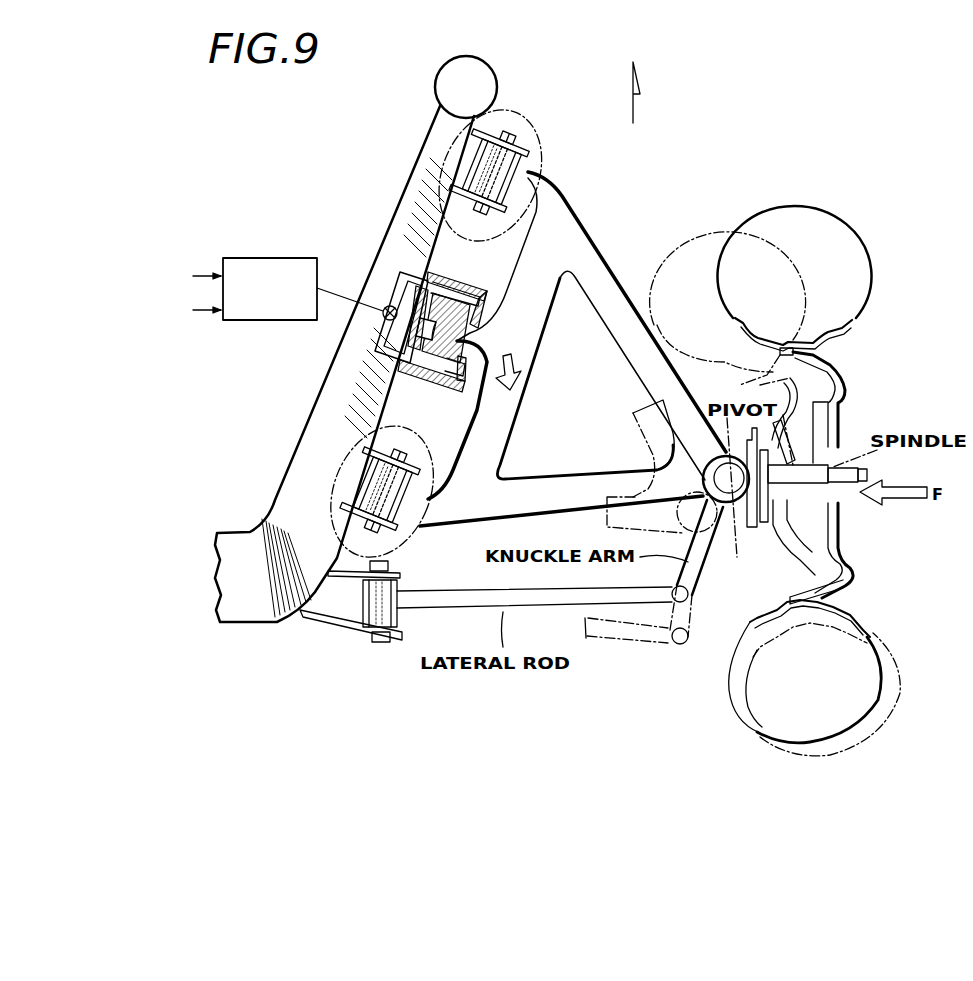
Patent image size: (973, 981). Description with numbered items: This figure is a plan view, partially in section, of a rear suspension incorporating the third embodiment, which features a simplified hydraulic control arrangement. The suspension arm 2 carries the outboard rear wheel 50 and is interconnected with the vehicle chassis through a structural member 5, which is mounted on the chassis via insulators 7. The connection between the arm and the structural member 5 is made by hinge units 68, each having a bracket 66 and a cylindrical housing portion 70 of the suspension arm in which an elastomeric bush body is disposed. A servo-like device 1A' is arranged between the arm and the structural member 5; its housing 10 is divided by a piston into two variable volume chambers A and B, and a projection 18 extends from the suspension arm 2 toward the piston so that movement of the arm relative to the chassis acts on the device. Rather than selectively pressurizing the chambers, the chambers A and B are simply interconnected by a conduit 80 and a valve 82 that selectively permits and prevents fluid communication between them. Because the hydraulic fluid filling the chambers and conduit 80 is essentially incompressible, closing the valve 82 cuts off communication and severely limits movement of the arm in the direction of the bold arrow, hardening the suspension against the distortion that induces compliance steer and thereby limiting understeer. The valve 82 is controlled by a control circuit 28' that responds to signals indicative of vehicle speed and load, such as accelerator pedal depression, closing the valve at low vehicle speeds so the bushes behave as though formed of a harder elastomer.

The suspension arm 2 is at (580, 227).
The structural member 5 is at (430, 148).
The insulator 7 is at (440, 88).
The housing 10 is at (474, 289).
The projection 18 is at (453, 337).
The control circuit 28' is at (194, 305).
The outboard rear wheel 50 is at (758, 215).
The bracket 66 is at (522, 150).
The hinge unit 68 is at (515, 111).
The cylindrical housing portion 70 is at (535, 173).
The conduit 80 is at (402, 275).
The valve 82 is at (385, 308).
The chamber A is at (445, 375).
The chamber B is at (453, 293).
The servo-like device 1A' is at (405, 404).